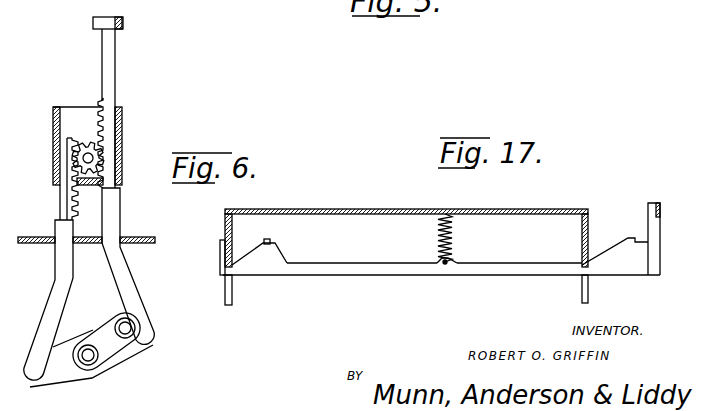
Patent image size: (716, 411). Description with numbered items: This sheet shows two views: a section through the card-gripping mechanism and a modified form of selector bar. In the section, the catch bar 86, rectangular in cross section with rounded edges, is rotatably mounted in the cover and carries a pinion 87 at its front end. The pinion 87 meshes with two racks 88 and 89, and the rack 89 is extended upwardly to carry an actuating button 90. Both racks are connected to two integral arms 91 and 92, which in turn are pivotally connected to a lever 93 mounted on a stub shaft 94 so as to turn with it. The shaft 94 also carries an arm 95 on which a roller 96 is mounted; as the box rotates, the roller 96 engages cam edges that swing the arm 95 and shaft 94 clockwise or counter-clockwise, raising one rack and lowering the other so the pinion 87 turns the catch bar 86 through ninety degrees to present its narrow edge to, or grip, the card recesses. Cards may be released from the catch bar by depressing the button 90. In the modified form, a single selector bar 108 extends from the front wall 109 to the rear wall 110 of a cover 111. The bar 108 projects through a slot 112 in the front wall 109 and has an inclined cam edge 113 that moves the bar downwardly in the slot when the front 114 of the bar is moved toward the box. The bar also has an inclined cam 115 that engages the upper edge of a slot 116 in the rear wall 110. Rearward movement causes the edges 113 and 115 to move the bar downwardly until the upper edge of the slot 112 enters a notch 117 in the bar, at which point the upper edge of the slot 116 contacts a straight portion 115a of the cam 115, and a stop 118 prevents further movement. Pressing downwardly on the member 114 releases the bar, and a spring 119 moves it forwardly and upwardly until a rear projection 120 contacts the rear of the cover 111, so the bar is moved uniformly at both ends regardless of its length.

In FIG. 6, the catch bar 86 is at (93, 158).
In FIG. 6, the pinion 87 is at (70, 152).
In FIG. 6, the rack 88 is at (62, 196).
In FIG. 6, the rack 89 is at (109, 118).
In FIG. 6, the actuating button 90 is at (123, 22).
In FIG. 6, the arm 91 is at (58, 290).
In FIG. 6, the arm 92 is at (125, 270).
In FIG. 6, the lever 93 is at (63, 378).
In FIG. 6, the stub shaft 94 is at (98, 360).
In FIG. 6, the arm 95 is at (112, 327).
In FIG. 6, the roller 96 is at (135, 322).
In FIG. 17, the selector bar 108 is at (513, 268).
In FIG. 17, the front wall 109 is at (587, 224).
In FIG. 17, the rear wall 110 is at (233, 226).
In FIG. 17, the cover 111 is at (490, 210).
In FIG. 17, the slot 112 is at (588, 266).
In FIG. 17, the inclined cam edge 113 is at (610, 257).
In FIG. 17, the front of the bar 114 is at (662, 217).
In FIG. 17, the inclined cam 115 is at (250, 251).
In FIG. 17, the straight portion 115a is at (266, 240).
In FIG. 17, the slot 116 is at (229, 265).
In FIG. 17, the notch 117 is at (660, 253).
In FIG. 17, the stop 118 is at (271, 243).
In FIG. 17, the spring 119 is at (452, 228).
In FIG. 17, the rear projection 120 is at (220, 250).